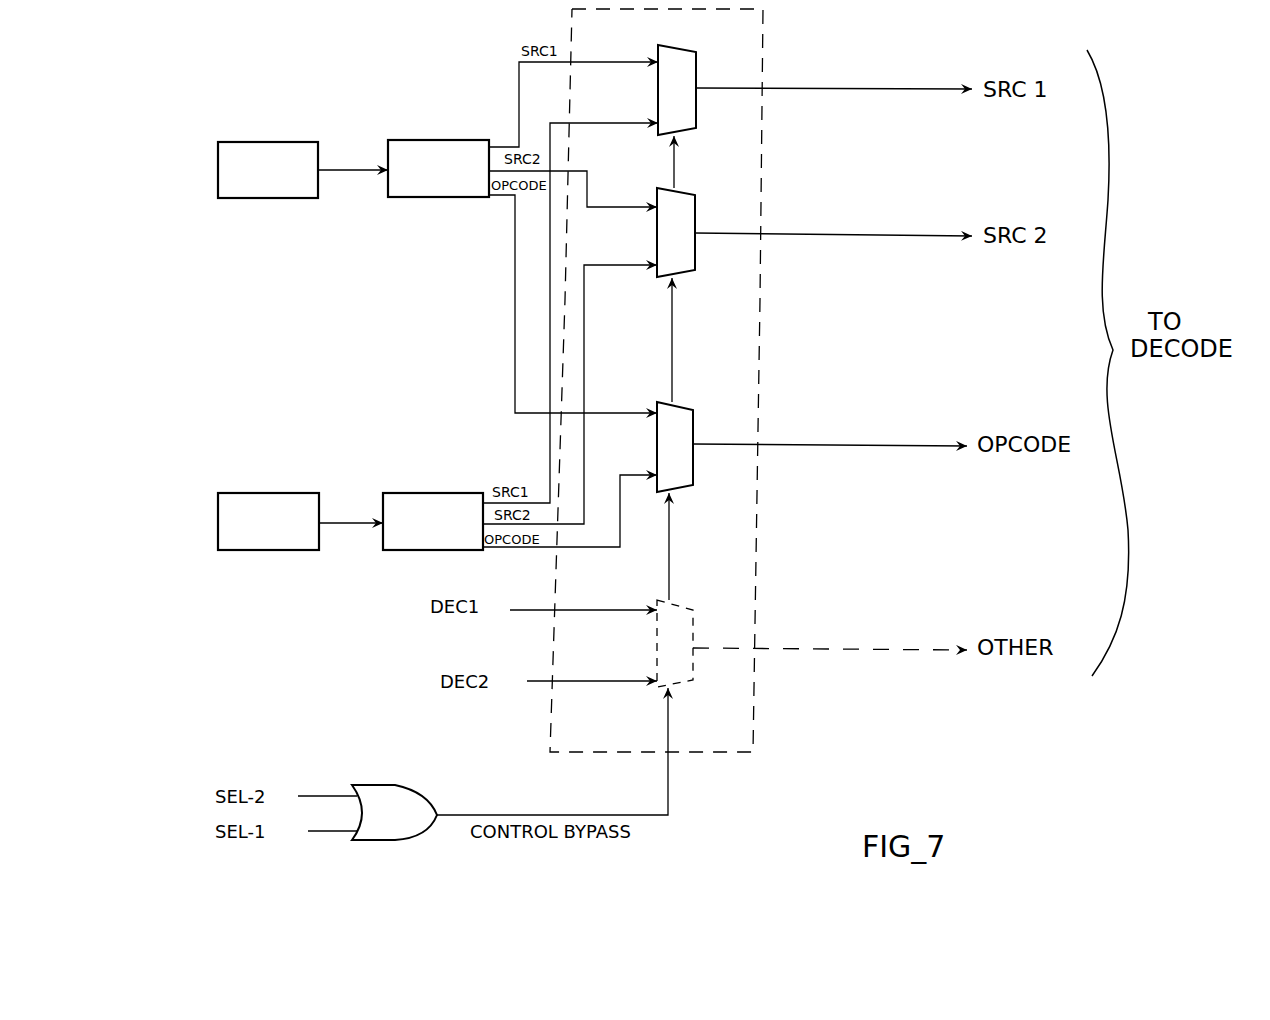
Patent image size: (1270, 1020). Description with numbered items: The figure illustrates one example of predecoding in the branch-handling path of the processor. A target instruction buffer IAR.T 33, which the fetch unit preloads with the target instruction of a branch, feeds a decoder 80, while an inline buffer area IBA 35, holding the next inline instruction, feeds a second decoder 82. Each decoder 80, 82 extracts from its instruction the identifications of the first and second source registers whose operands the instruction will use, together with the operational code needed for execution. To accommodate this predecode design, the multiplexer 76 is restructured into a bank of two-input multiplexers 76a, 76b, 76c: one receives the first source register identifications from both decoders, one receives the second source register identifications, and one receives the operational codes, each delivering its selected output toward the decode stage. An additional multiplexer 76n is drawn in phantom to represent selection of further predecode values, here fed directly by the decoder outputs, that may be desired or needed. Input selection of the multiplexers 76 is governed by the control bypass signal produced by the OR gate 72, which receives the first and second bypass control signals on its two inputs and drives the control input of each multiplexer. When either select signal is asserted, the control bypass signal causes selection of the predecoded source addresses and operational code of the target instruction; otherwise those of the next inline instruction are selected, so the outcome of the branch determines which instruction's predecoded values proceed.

The target instruction buffer (IAR.T) 33 is at (270, 141).
The decoder 80 is at (430, 139).
The inline buffer area (IBA) 35 is at (270, 552).
The decoder 82 is at (430, 492).
The multiplexer 76 is at (765, 55).
The two-input multiplexer 76a is at (675, 44).
The two-input multiplexer 76b is at (682, 278).
The two-input multiplexer 76c is at (680, 401).
The additional multiplexer 76n is at (680, 688).
The OR gate 72 is at (418, 840).